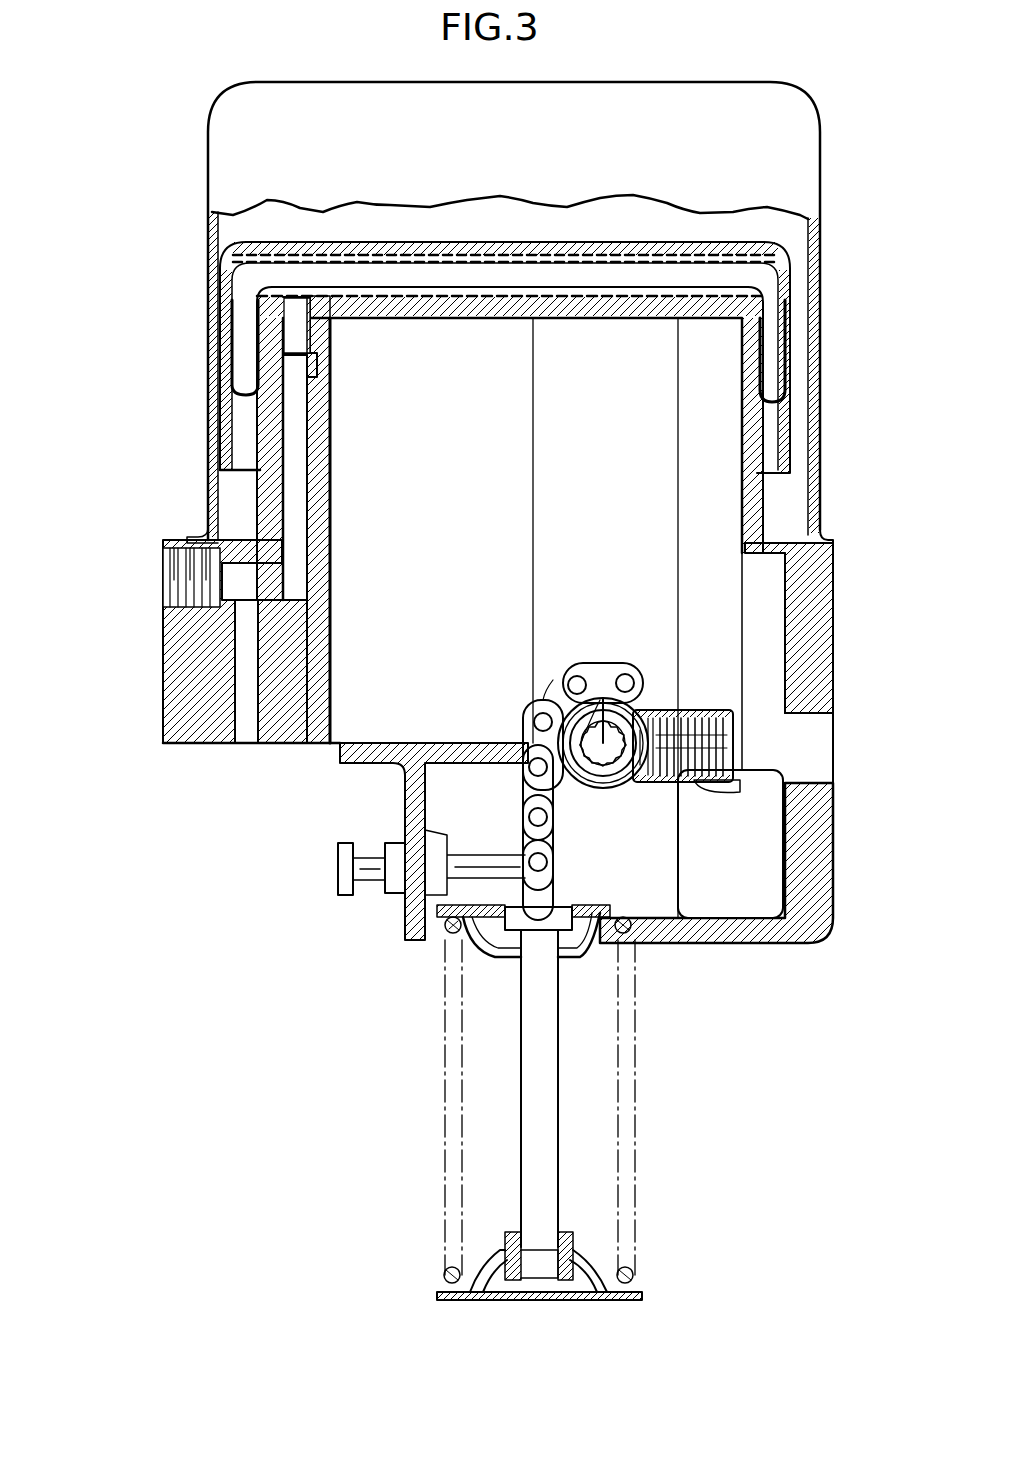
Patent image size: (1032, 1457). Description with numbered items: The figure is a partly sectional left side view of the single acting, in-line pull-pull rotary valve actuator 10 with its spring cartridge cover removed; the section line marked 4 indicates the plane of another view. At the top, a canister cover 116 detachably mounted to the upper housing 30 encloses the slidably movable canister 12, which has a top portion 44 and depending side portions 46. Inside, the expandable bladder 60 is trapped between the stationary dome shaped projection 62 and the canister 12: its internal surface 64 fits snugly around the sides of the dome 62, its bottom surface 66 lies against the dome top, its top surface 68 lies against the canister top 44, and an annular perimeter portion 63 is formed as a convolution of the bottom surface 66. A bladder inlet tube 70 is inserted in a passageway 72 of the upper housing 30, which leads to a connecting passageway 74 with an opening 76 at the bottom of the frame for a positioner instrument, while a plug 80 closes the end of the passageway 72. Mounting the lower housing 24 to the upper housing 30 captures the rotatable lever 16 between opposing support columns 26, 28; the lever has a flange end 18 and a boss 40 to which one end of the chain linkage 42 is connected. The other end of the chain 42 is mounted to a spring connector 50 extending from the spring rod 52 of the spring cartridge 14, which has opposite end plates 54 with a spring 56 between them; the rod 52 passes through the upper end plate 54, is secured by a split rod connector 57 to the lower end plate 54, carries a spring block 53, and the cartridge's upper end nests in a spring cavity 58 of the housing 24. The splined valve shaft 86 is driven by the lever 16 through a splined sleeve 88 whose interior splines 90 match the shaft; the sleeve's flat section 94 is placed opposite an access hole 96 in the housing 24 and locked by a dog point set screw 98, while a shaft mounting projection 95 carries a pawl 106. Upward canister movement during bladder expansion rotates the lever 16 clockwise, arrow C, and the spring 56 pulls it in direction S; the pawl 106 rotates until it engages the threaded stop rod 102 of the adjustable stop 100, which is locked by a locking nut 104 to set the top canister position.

The rotary valve actuator 10 is at (840, 350).
The canister cover 116 is at (808, 138).
The canister 12 is at (598, 287).
The spring cartridge 14 is at (428, 1040).
The rotatable lever 16 is at (613, 630).
The flange end 18 is at (700, 790).
The lower housing 24 is at (835, 878).
The bearing support column 26 is at (676, 880).
The support column 28 is at (548, 462).
The upper housing 30 is at (835, 600).
The boss 40 is at (615, 660).
The chain linkage 42 is at (520, 723).
The canister top portion 44 is at (420, 243).
The canister side portion 46 is at (210, 375).
The spring connector 50 is at (556, 882).
The spring rod 52 is at (545, 1030).
The spring block 53 is at (562, 932).
The end plate 54 is at (495, 958).
The spring 56 is at (628, 944).
The split rod connector 57 is at (512, 1235).
The spring cavity 58 is at (438, 948).
The bladder 60 is at (560, 270).
The dome shaped projection 62 is at (505, 320).
The bladder annular perimeter portion 63 is at (314, 430).
The bladder internal surface 64 is at (757, 330).
The bladder bottom surface 66 is at (420, 300).
The bladder top surface 68 is at (698, 266).
The bladder inlet tube 70 is at (322, 360).
The passageway 72 is at (300, 385).
The connecting passageway 74 is at (262, 690).
The passageway opening 76 is at (246, 745).
The plug 80 is at (163, 575).
The valve shaft 86 is at (610, 795).
The splined sleeve 88 is at (608, 760).
The interior splines 90 is at (598, 765).
The flat section 94 is at (722, 738).
The shaft mounting projection 95 is at (678, 710).
The access hole 96 is at (818, 768).
The set screw 98 is at (726, 712).
The canister top position adjustable stop 100 is at (330, 845).
The threaded stop rod 102 is at (462, 855).
The locking nut 104 is at (395, 842).
The pawl 106 is at (740, 812).
The clockwise rotation notation C is at (505, 650).
The spring rotation notation S is at (580, 635).
The section line 4- 4 is at (882, 757).